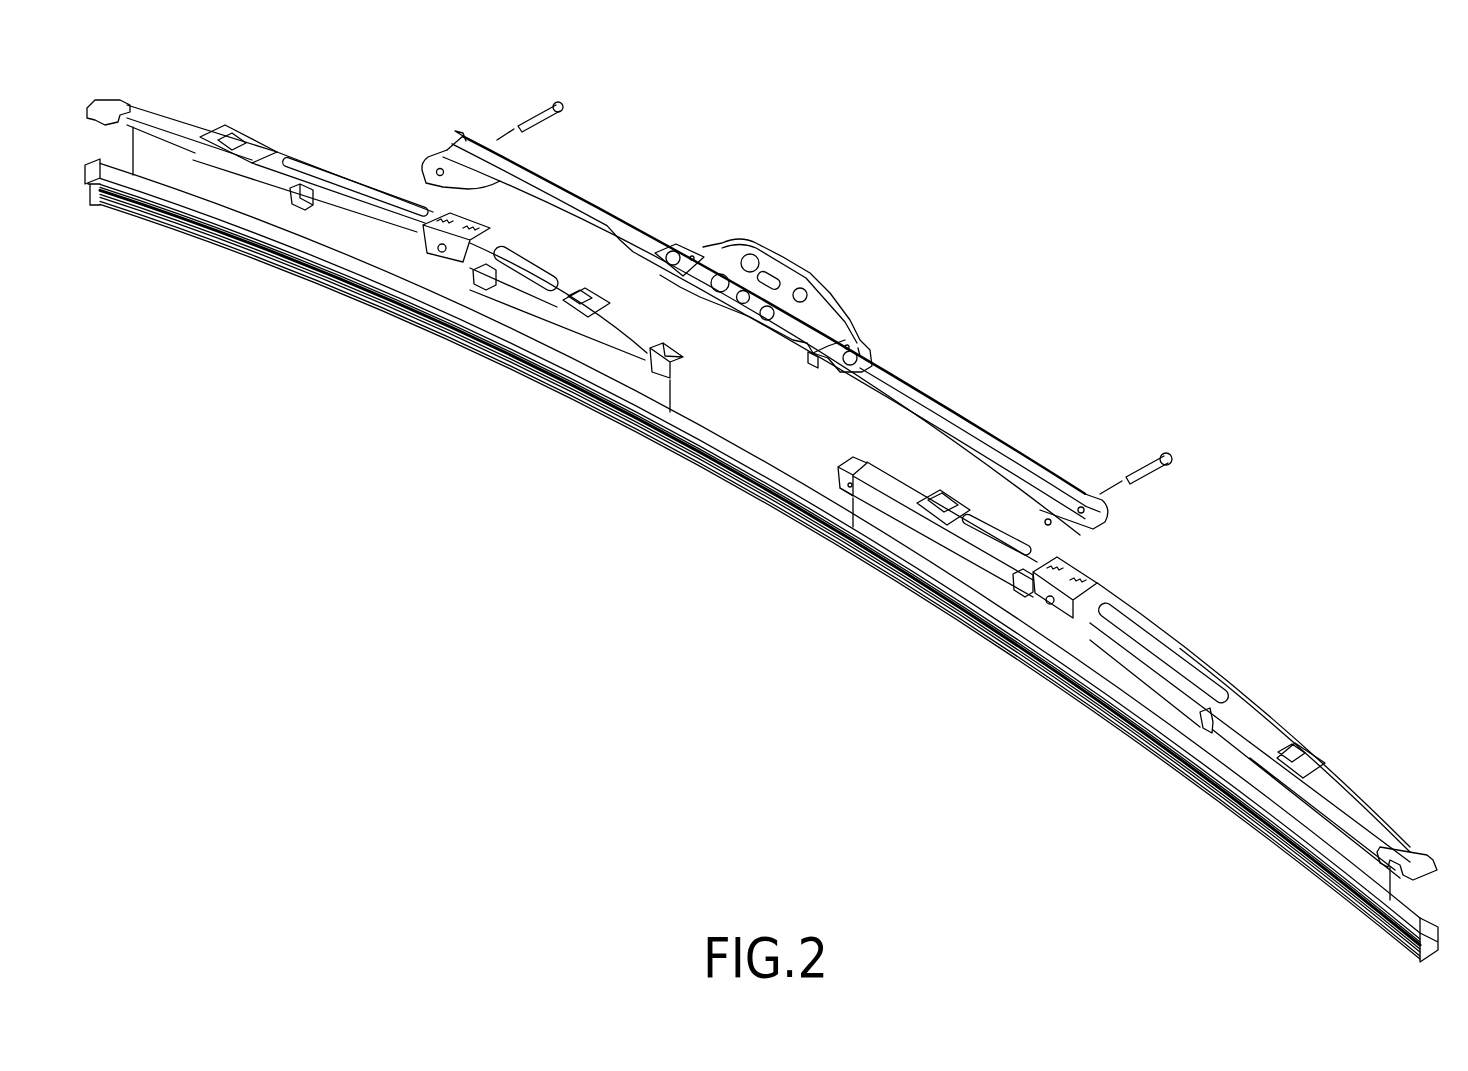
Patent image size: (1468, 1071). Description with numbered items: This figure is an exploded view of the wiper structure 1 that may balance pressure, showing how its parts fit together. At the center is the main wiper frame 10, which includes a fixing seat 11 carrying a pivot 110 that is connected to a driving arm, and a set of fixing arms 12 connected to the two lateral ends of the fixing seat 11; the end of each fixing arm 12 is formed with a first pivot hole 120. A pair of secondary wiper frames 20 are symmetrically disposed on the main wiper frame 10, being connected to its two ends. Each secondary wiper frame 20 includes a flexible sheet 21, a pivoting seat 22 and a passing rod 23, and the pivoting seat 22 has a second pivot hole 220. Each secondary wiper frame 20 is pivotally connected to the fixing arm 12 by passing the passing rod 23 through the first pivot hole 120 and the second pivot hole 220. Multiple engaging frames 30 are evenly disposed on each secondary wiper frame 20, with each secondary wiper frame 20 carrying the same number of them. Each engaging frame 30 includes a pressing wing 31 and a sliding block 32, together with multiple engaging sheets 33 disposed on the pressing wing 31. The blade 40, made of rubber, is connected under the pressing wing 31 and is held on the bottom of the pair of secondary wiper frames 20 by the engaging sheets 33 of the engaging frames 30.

The wiper structure 1 is at (772, 79).
The main wiper frame 10 is at (919, 364).
The fixing seat 11 is at (822, 292).
The pivot 110 is at (775, 276).
The fixing arm 12 is at (982, 437).
The first pivot hole 120 is at (1049, 510).
The secondary wiper frame 20 is at (336, 160).
The flexible sheet 21 is at (1227, 693).
The pivoting seat 22 is at (1085, 570).
The second pivot hole 220 is at (1046, 605).
The passing rod 23 is at (1150, 456).
The engaging frame 30 is at (181, 119).
The pressing wing 31 is at (1347, 807).
The sliding block 32 is at (1298, 742).
The engaging sheet 33 is at (1372, 858).
The blade 40 is at (702, 468).